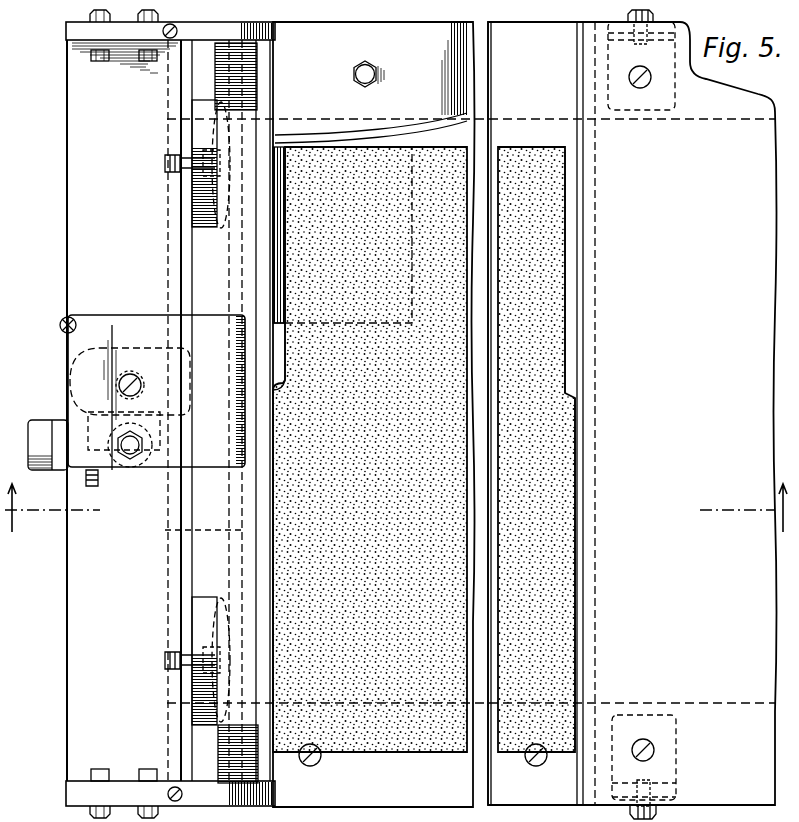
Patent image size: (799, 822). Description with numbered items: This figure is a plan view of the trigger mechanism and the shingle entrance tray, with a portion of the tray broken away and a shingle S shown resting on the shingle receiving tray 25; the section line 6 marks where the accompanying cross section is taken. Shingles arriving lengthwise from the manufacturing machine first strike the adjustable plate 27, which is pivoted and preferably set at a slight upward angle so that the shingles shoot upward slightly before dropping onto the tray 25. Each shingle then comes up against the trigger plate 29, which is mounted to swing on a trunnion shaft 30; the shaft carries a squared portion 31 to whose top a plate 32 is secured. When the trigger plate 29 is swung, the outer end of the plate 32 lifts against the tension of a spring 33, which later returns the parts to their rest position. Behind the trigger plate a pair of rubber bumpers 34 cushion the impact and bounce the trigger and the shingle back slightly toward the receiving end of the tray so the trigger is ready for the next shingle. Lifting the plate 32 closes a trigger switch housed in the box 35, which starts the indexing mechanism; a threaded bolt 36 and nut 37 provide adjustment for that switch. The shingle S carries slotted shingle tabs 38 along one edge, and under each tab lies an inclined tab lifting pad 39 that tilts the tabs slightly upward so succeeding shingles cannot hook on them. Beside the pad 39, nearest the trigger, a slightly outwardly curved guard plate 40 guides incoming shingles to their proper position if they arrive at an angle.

The section line 6- 6 is at (398, 517).
The shingle receiving tray 25 is at (535, 413).
The adjustable plate 27 is at (716, 319).
The trigger plate 29 is at (191, 530).
The trunnion shaft 30 is at (266, 801).
The squared portion 31 is at (232, 743).
The plate 32 is at (152, 342).
The spring 33 is at (60, 328).
The rubber bumpers 34 is at (192, 203).
The box 35 is at (62, 420).
The threaded bolt 36 is at (138, 462).
The nut 37 is at (272, 160).
The shingle tabs 38 is at (552, 272).
The inclined tab lifting pad 39 is at (440, 156).
The guard plate 40 is at (407, 133).
The shingle S is at (560, 452).